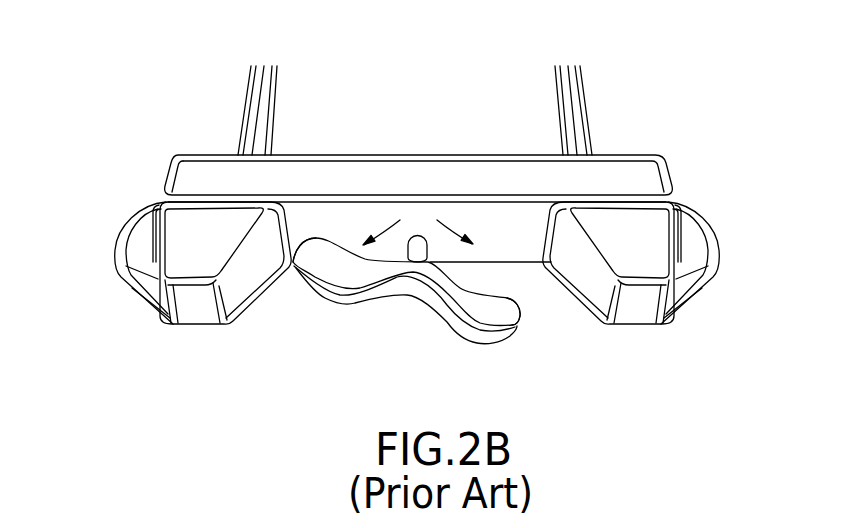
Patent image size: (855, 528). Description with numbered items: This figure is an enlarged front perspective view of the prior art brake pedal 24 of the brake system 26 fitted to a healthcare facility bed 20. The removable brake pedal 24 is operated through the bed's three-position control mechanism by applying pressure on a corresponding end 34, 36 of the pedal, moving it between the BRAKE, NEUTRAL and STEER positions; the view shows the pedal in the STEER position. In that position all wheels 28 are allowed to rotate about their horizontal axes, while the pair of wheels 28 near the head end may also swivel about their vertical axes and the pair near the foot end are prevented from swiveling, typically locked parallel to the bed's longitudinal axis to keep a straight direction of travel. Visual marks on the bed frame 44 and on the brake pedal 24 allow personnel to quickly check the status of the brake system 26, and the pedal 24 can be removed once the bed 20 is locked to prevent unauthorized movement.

The healthcare facility bed 20 is at (530, 85).
The brake pedal 24 is at (388, 330).
The brake system 26 is at (424, 185).
The wheels 28 is at (167, 262).
The end of the pedal 34 is at (302, 288).
The end of the pedal 36 is at (513, 318).
The bed frame 44 is at (620, 170).